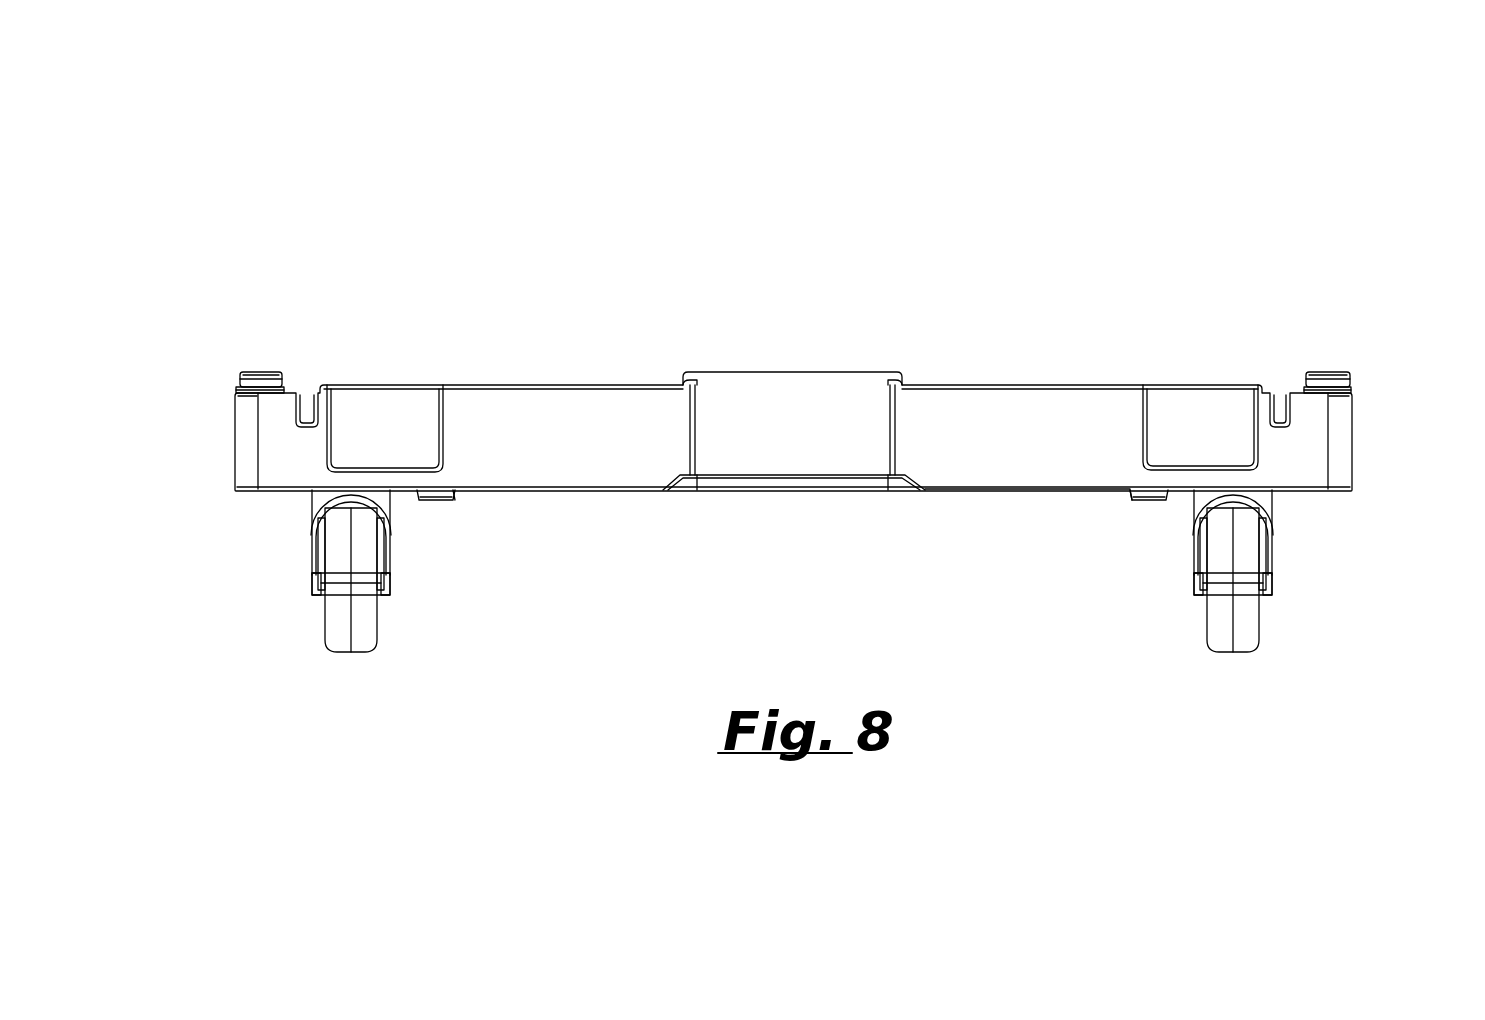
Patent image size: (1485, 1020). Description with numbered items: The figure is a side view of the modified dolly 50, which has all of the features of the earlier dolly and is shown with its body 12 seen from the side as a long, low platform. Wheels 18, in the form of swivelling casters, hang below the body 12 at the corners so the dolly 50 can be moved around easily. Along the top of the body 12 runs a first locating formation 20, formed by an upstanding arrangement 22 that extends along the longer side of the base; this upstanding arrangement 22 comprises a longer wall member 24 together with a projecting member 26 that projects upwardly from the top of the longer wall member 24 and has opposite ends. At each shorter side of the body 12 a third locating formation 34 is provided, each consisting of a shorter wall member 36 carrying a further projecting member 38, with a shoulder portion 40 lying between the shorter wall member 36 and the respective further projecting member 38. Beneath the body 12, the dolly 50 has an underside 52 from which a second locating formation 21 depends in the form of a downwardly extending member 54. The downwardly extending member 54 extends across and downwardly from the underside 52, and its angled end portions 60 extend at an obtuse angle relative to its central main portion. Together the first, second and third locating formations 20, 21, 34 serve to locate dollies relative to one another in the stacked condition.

The body 12 is at (578, 459).
The wheel 18 is at (1245, 622).
The first locating formation 20 is at (998, 385).
The second locating formation 21 is at (453, 498).
The upstanding arrangement 22 is at (516, 385).
The longer wall member 24 is at (1143, 384).
The projecting member 26 is at (776, 372).
The third locating formation 34 is at (235, 376).
The shorter wall member 36 is at (240, 395).
The further projecting member 38 is at (263, 372).
The shoulder portion 40 is at (291, 394).
The dolly 50 is at (425, 290).
The underside 52 is at (1013, 489).
The downwardly extending member 54 is at (422, 500).
The angled end portion 60 is at (445, 500).